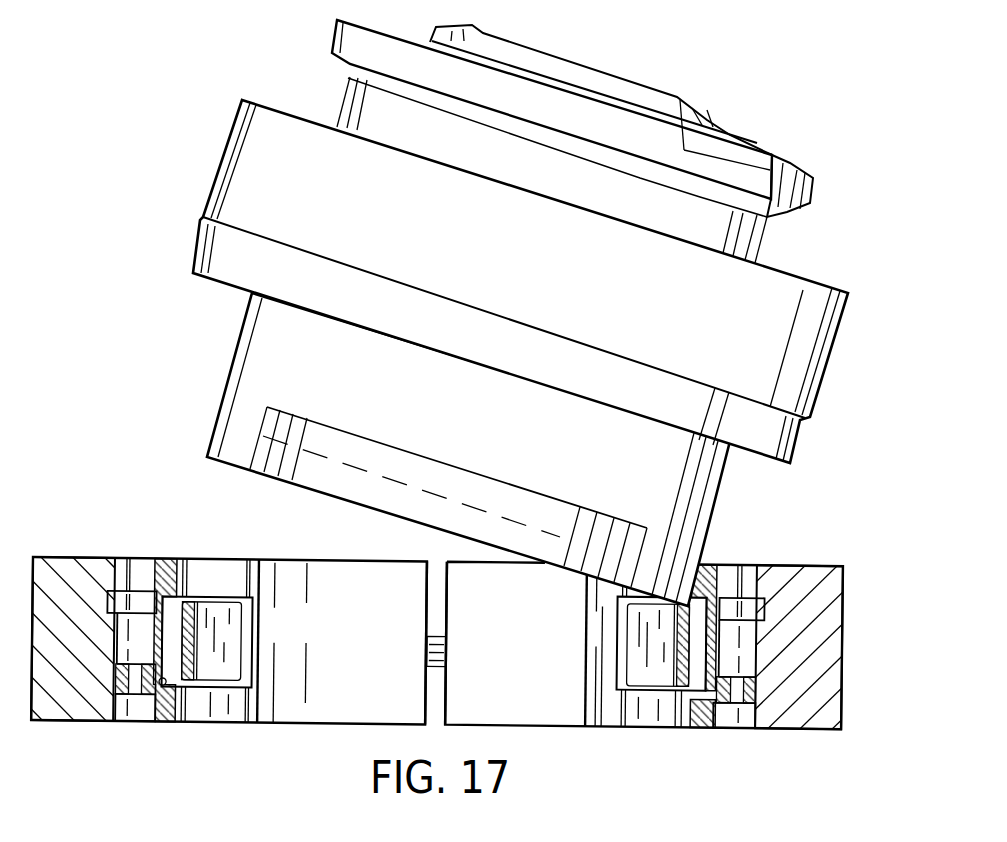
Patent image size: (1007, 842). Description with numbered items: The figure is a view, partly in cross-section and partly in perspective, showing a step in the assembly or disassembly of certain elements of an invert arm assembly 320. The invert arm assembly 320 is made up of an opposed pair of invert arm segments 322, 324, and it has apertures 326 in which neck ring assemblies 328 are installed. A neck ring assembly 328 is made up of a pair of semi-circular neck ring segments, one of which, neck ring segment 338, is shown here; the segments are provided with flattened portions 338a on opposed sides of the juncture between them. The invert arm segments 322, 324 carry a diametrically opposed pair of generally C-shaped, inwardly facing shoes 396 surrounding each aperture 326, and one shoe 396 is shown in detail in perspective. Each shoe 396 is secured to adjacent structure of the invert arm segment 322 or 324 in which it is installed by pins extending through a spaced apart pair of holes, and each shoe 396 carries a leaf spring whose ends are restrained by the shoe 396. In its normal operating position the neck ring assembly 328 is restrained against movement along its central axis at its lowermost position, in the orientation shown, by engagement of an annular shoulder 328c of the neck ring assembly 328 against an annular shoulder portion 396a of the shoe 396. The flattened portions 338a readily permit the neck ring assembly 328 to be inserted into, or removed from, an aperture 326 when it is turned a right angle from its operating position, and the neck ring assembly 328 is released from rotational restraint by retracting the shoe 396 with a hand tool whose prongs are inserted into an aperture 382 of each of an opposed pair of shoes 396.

The invert arm assembly 320 is at (813, 550).
The invert arm segment 322 is at (845, 673).
The invert arm segment 324 is at (35, 683).
The aperture 326 is at (528, 637).
The neck ring assembly 328 is at (810, 190).
The annular shoulder 328c is at (230, 286).
The neck ring segment 338 is at (222, 170).
The flattened portion 338a is at (222, 400).
The aperture 382 is at (210, 667).
The shoe 396 is at (180, 712).
The annular shoulder portion 396a is at (160, 698).